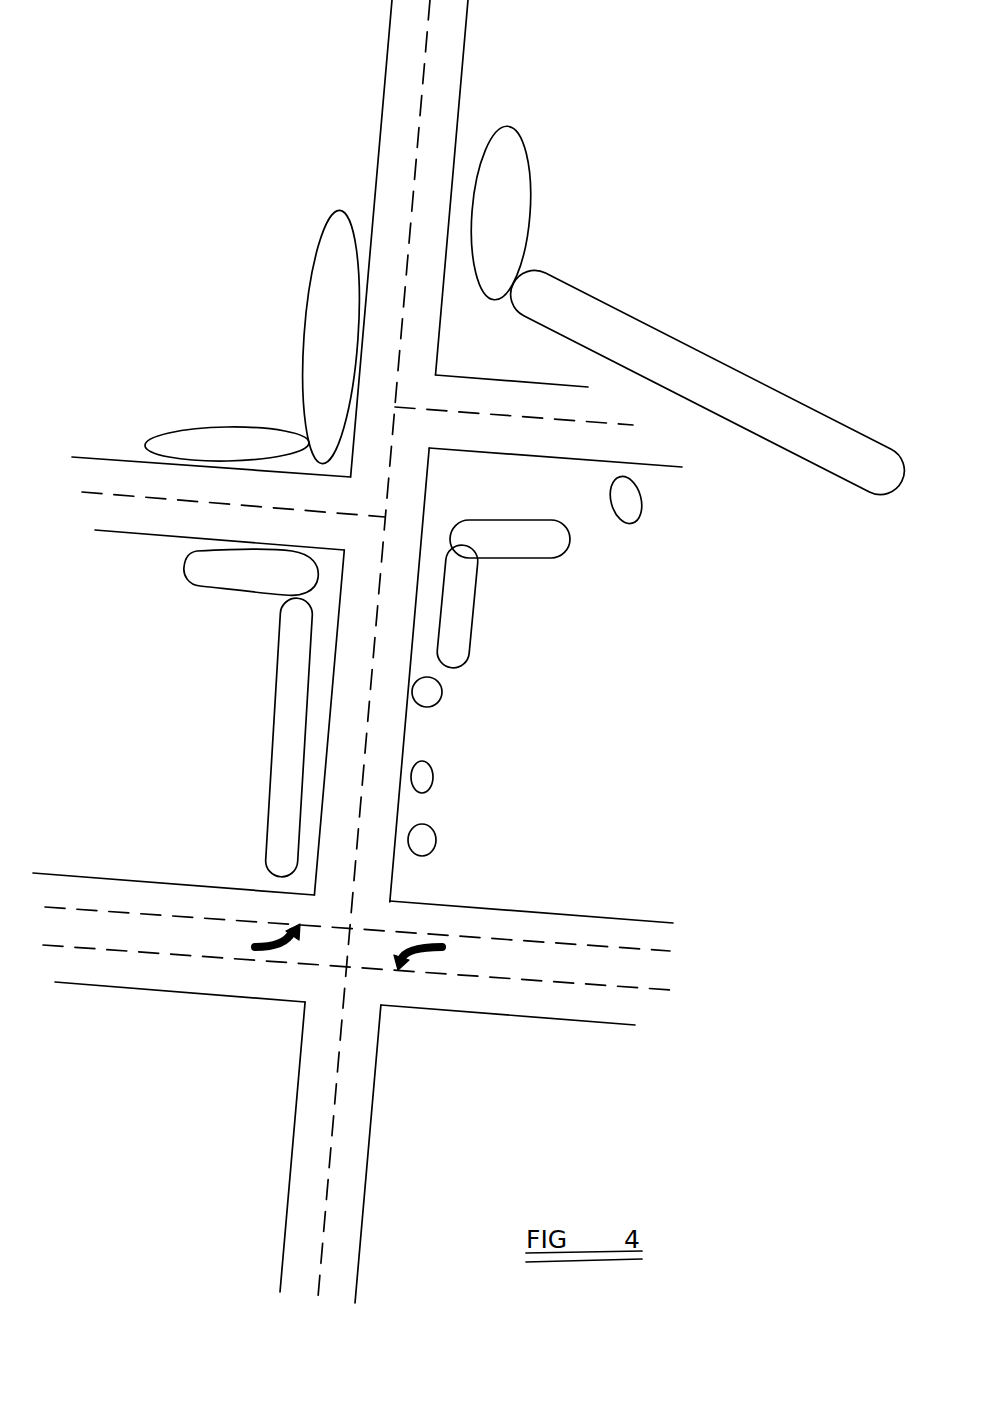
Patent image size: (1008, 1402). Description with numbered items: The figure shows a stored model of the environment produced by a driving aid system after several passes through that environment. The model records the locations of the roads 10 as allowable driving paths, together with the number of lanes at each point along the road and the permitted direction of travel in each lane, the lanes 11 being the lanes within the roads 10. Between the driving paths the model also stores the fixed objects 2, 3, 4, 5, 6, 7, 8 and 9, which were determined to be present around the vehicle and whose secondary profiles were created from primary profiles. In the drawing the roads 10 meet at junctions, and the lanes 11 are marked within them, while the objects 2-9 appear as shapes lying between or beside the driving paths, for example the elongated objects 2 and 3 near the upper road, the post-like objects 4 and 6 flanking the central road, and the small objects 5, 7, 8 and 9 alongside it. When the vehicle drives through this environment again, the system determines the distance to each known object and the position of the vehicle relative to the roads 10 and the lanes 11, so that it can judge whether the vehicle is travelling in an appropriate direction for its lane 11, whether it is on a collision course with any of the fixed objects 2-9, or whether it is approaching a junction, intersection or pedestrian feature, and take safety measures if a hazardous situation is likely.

The object 2 is at (307, 343).
The object 3 is at (625, 286).
The object 4 is at (273, 687).
The object 5 is at (633, 518).
The object 6 is at (475, 597).
The object 7 is at (442, 696).
The object 8 is at (434, 782).
The object 9 is at (437, 847).
The road 10 is at (461, 90).
The lane 11 is at (442, 162).